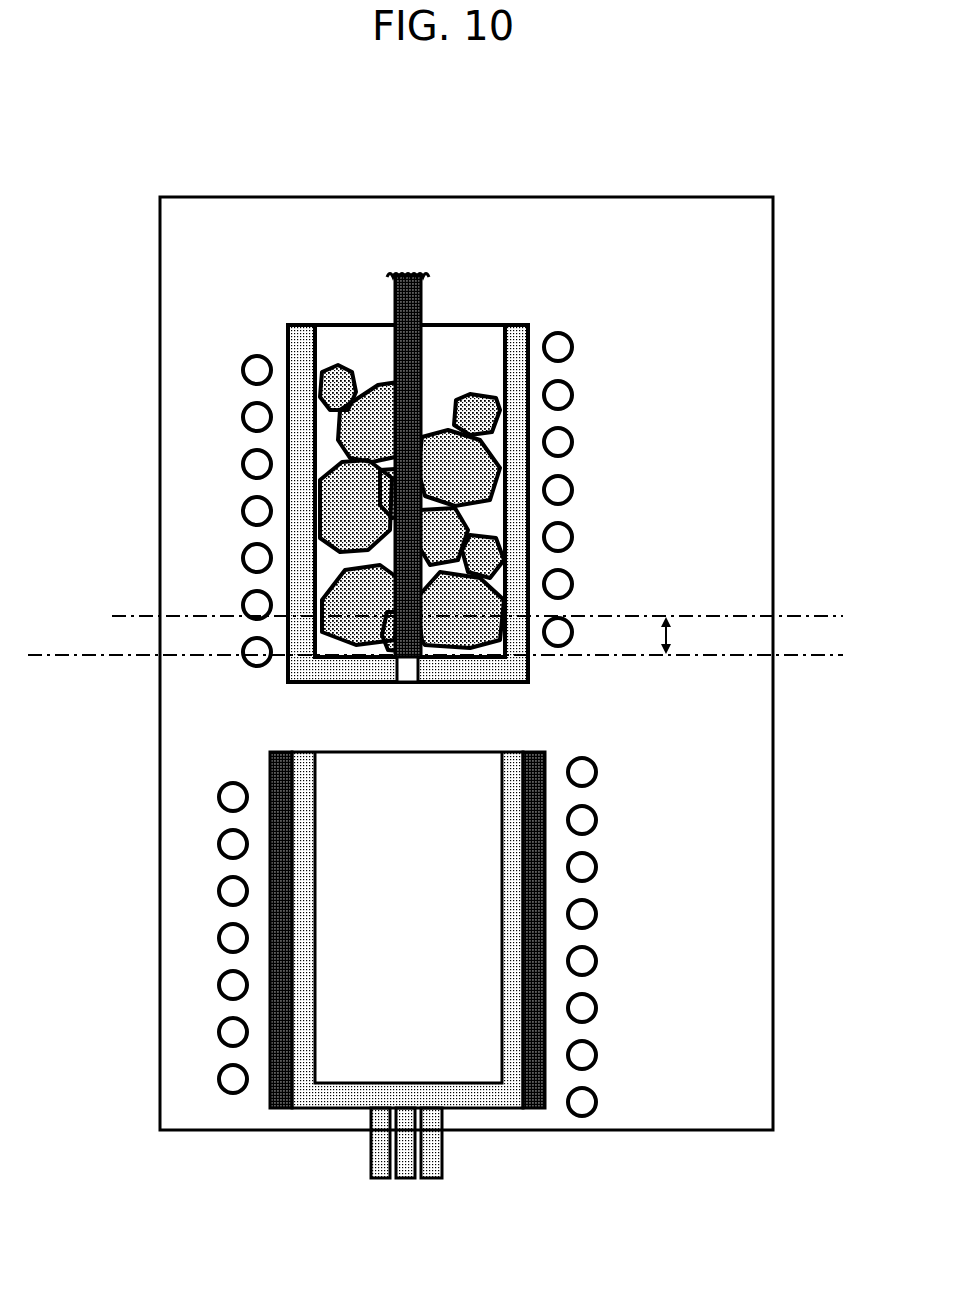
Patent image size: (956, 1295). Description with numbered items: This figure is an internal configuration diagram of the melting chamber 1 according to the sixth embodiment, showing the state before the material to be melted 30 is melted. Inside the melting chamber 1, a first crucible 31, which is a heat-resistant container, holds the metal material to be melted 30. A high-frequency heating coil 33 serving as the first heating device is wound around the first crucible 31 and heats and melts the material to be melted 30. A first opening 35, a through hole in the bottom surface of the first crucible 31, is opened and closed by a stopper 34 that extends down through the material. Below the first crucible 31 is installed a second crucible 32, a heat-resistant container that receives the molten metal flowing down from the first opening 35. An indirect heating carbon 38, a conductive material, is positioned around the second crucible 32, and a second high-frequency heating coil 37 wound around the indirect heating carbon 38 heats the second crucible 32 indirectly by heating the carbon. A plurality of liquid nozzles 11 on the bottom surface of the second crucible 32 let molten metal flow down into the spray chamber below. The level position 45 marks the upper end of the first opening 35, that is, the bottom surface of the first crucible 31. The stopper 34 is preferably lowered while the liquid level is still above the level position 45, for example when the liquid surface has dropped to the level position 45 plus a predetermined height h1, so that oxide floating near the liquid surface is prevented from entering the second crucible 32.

The melting chamber 1 is at (731, 260).
The liquid nozzles 11 is at (442, 1150).
The material to be melted 30 is at (470, 400).
The first crucible 31 is at (311, 325).
The second crucible 32 is at (512, 752).
The high-frequency heating coil 33 is at (257, 354).
The stopper 34 is at (422, 292).
The first opening 35 is at (396, 668).
The high-frequency heating coil 37 is at (586, 760).
The indirect heating carbon 38 is at (540, 752).
The level position 45 is at (68, 655).
The predetermined height h1 is at (689, 636).